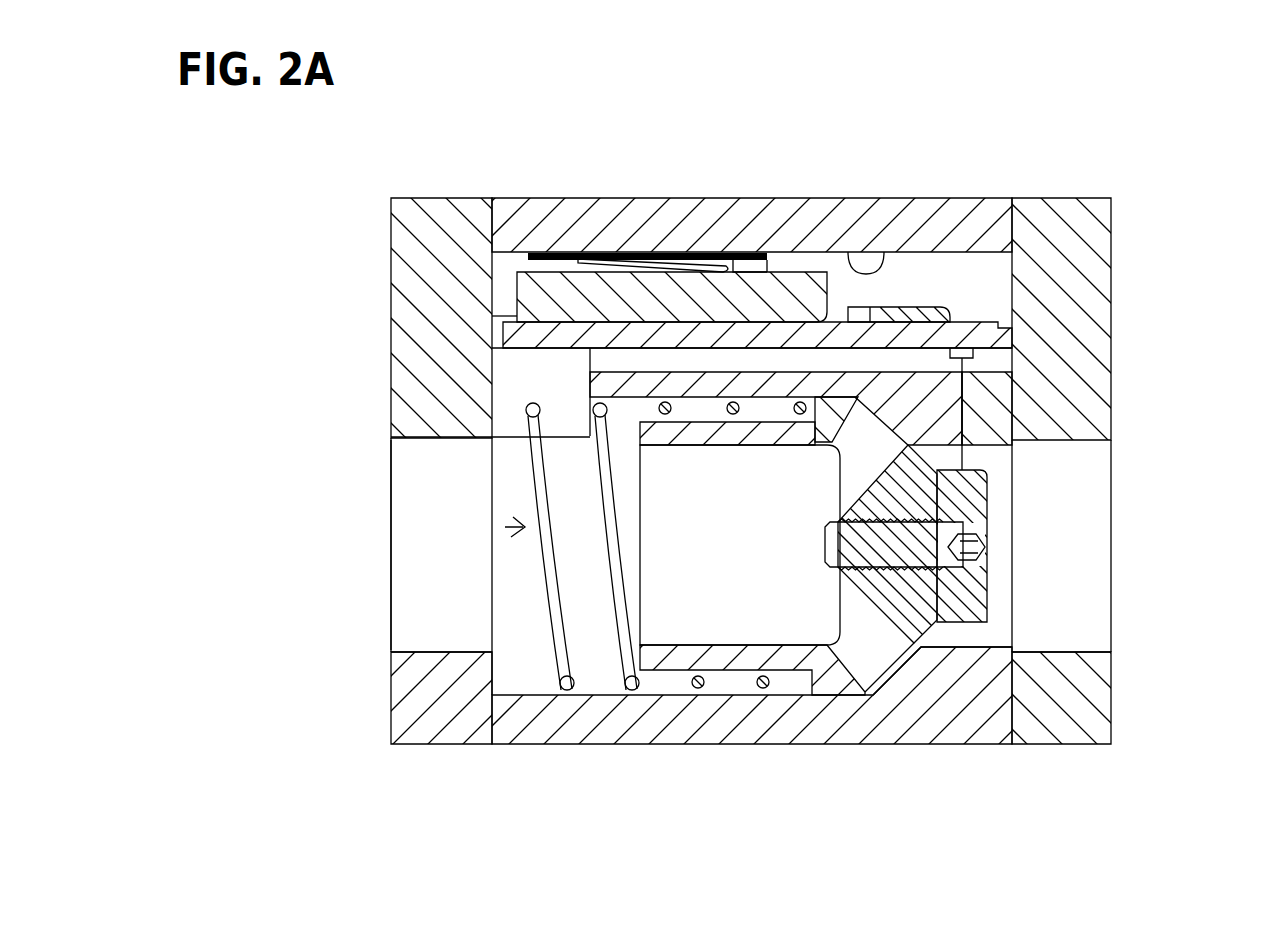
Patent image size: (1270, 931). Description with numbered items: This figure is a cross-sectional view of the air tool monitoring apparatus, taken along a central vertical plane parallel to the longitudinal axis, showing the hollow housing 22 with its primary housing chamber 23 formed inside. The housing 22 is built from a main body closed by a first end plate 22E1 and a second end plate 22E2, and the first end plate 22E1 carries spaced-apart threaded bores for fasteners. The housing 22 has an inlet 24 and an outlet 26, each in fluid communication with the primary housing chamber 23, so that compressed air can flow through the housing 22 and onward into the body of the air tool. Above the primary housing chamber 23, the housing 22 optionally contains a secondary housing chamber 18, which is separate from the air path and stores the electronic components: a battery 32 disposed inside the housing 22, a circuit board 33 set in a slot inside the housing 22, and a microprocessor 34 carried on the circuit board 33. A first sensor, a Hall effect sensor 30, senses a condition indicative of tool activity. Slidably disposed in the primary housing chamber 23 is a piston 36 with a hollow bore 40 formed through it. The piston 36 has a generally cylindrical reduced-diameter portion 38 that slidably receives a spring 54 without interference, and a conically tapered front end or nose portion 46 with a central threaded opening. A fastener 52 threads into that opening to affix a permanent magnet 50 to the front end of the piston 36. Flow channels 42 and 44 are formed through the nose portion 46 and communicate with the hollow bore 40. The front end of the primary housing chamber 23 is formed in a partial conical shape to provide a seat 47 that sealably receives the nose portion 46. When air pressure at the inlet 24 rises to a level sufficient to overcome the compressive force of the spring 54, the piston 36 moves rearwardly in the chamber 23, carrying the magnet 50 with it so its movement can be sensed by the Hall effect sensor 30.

The secondary housing chamber 18 is at (885, 265).
The housing 22 is at (650, 776).
The first end plate 22E1 is at (1073, 748).
The second end plate 22E2 is at (397, 750).
The primary housing chamber 23 is at (505, 528).
The inlet 24 is at (1095, 650).
The outlet 26 is at (430, 652).
The Hall effect sensor 30 is at (977, 355).
The battery 32 is at (793, 268).
The circuit board 33 is at (1002, 328).
The microprocessor 34 is at (923, 303).
The piston 36 is at (840, 682).
The reduced-diameter portion 38 is at (733, 672).
The hollow bore 40 is at (740, 571).
The flow channel 42 is at (877, 473).
The flow channel 44 is at (890, 663).
The nose portion 46 is at (927, 636).
The seat 47 is at (867, 426).
The permanent magnet 50 is at (987, 483).
The fastener 52 is at (983, 563).
The spring 54 is at (547, 575).